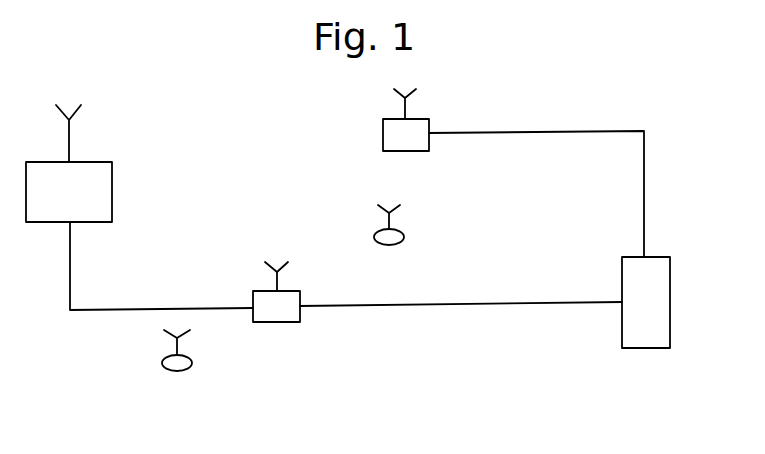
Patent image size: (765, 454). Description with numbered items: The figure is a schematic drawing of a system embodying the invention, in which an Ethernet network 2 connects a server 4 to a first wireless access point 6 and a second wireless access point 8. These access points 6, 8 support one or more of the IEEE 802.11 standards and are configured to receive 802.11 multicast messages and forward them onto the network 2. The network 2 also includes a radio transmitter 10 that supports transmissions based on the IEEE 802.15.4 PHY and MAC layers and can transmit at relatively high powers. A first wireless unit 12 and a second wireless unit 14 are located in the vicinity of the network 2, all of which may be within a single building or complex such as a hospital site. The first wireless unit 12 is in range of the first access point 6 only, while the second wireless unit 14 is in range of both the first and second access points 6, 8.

The Ethernet network 2 is at (664, 146).
The server 4 is at (646, 331).
The first wireless access point 6 is at (277, 311).
The second wireless access point 8 is at (395, 133).
The radio transmitter 10 is at (88, 188).
The first wireless unit 12 is at (163, 361).
The second wireless unit 14 is at (395, 236).